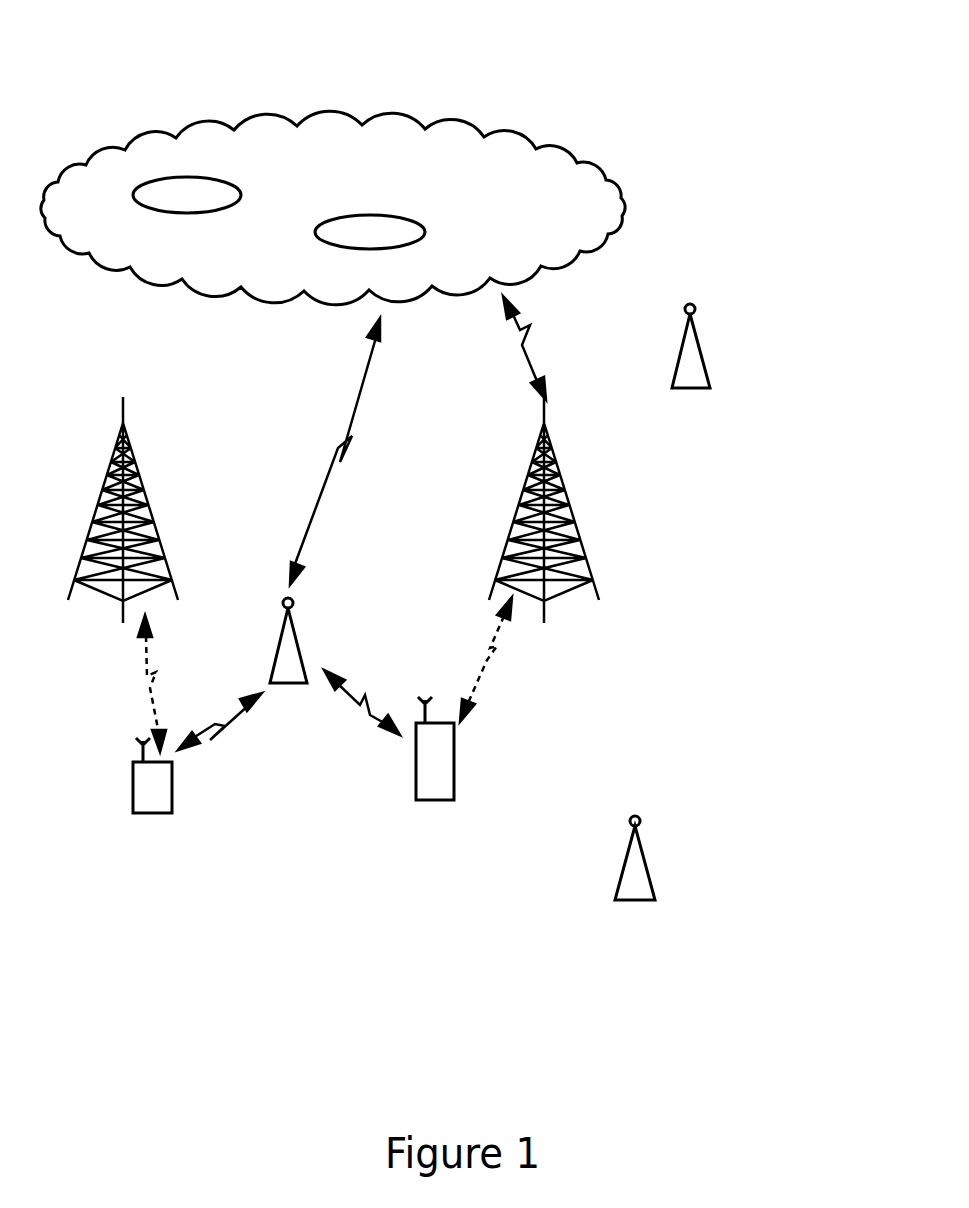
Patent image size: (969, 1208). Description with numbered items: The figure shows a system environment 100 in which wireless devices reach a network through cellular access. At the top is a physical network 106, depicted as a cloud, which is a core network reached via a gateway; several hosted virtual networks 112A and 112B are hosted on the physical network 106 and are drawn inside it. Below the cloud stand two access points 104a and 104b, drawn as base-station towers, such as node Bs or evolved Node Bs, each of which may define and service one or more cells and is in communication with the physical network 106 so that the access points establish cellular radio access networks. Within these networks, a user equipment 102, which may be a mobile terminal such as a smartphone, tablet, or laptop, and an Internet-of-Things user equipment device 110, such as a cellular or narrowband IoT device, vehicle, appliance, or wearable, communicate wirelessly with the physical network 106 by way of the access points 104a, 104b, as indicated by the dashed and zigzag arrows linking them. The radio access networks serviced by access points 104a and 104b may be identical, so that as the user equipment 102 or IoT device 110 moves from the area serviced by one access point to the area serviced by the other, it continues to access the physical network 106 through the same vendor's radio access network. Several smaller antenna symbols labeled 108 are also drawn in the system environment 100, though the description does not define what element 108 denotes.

The system environment 100 is at (535, 55).
The user equipment 102 is at (454, 775).
The access point 104a is at (568, 520).
The access point 104b is at (145, 508).
The physical network 106 is at (545, 138).
The access point 108 is at (300, 643).
The Internet-of-Things user equipment device 110 is at (172, 790).
The hosted virtual network 112A is at (237, 200).
The hosted virtual network 112B is at (420, 235).